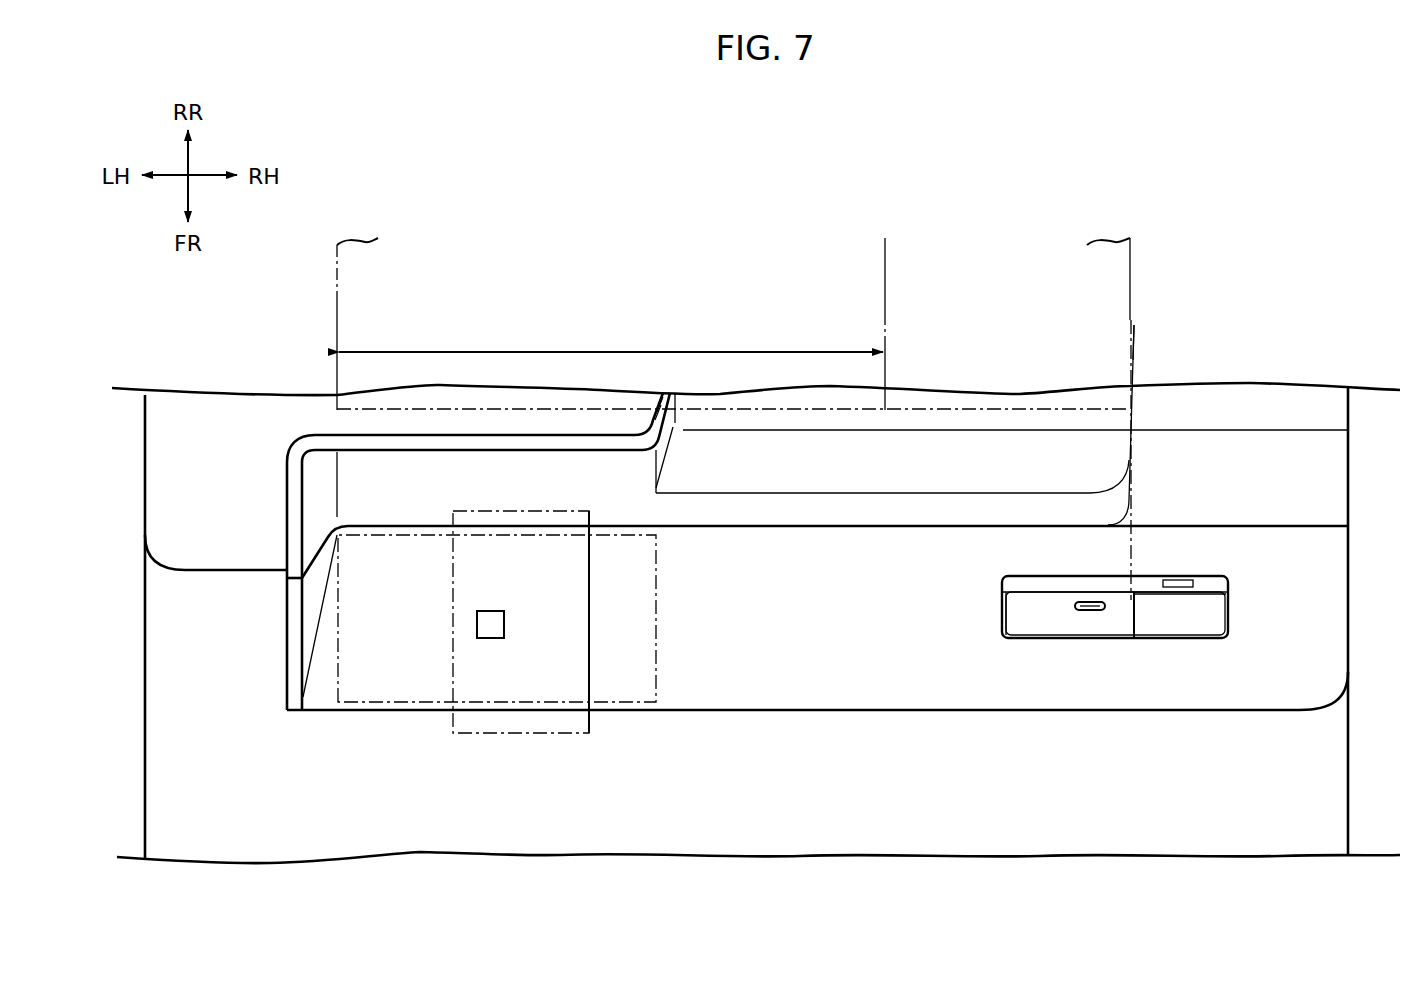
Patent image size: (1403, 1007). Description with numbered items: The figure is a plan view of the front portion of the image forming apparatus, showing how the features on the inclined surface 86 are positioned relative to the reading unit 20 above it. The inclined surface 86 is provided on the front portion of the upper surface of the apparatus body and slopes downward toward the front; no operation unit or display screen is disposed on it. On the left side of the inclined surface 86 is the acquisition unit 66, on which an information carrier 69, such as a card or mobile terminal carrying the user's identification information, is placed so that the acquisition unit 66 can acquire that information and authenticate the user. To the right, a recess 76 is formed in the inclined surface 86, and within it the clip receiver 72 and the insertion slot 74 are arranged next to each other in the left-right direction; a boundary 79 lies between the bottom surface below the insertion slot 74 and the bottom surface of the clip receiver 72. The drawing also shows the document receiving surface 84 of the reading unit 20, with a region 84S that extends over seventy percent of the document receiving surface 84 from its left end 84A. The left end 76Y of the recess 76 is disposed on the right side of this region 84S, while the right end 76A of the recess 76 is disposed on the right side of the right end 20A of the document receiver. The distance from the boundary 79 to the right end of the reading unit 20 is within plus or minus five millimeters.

The document receiving surface 84 is at (334, 264).
The end of the document receiving surface 84A is at (337, 300).
The region 84S is at (617, 352).
The reading unit 20 is at (1137, 468).
The right end of the document receiver 20A is at (1131, 447).
The inclined surface 86 is at (880, 688).
The acquisition unit 66 is at (656, 650).
The information carrier 69 is at (558, 736).
The recess 76 is at (1026, 624).
The insertion slot 74 is at (1196, 593).
The right end of the recess 76A is at (1230, 597).
The end of the recess 76Y is at (1002, 612).
The clip receiver 72 is at (1050, 617).
The boundary 79 is at (1132, 619).